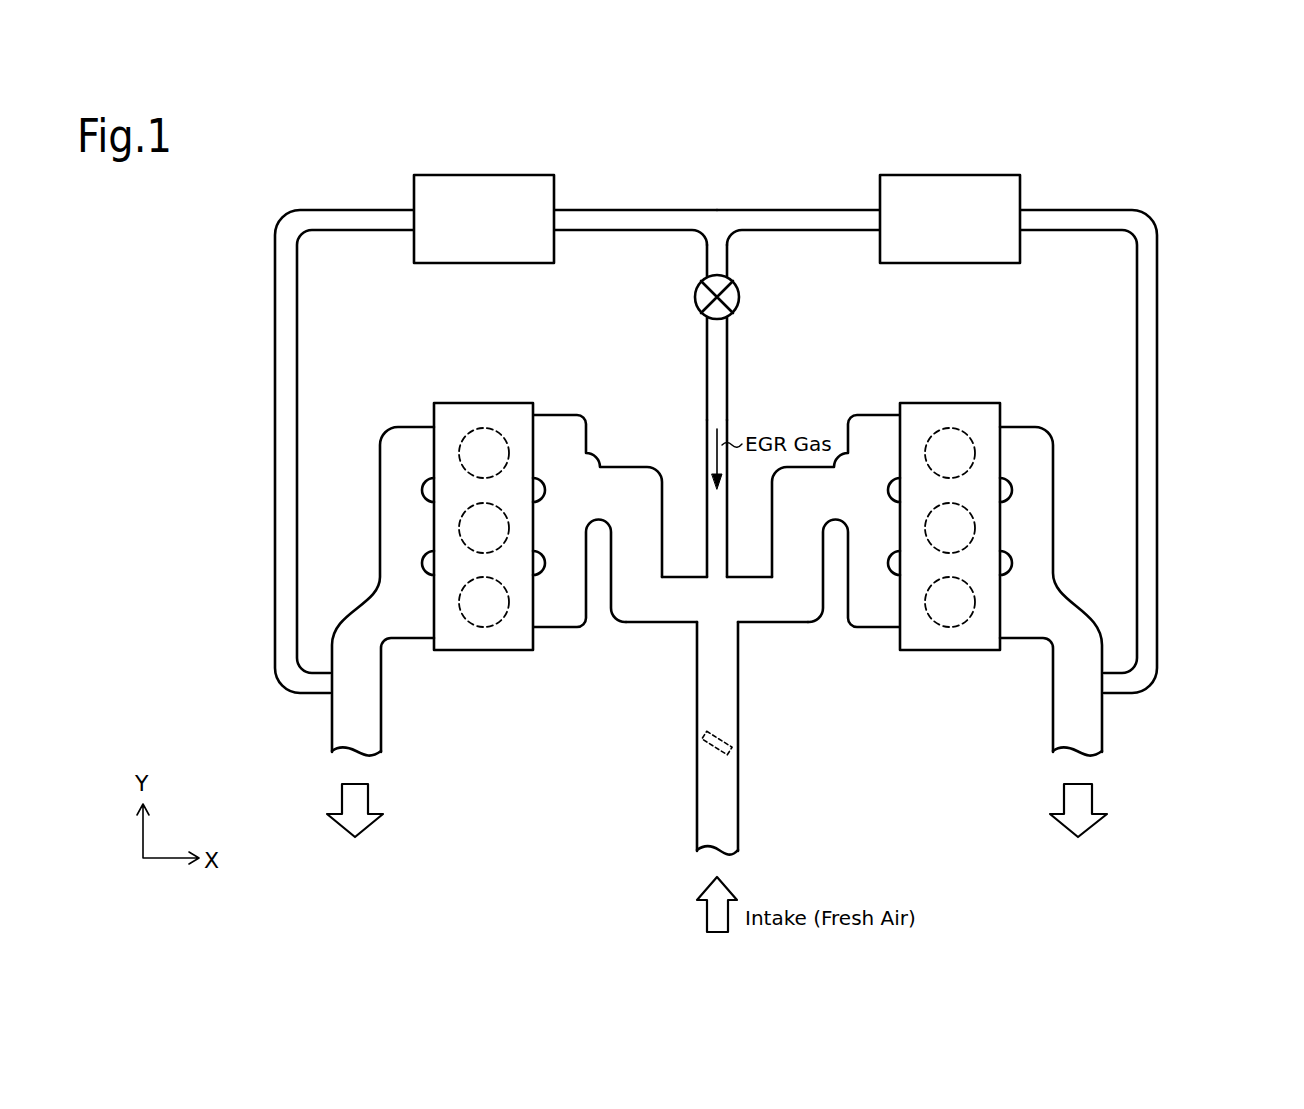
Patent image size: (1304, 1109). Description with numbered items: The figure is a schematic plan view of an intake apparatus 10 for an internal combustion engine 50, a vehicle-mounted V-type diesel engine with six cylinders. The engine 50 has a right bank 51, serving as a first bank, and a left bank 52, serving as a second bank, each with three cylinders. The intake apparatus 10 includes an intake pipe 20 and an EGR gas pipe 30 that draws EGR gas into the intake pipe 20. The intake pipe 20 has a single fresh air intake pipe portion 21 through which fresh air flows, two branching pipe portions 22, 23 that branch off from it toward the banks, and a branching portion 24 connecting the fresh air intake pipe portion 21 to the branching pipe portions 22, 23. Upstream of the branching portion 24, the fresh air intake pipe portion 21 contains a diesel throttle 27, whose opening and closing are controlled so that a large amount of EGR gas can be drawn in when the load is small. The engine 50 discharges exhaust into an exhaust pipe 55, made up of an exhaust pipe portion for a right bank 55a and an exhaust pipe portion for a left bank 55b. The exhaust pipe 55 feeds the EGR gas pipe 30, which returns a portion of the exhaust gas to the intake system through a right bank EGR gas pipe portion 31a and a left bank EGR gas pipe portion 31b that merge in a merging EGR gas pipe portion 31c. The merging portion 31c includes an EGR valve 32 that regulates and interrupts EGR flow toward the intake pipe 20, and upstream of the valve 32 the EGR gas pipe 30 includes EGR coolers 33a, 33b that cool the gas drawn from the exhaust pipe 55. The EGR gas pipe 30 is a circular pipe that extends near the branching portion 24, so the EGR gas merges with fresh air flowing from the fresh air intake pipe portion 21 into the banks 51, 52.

The intake apparatus 10 is at (802, 776).
The intake pipe 20 is at (738, 692).
The fresh air intake pipe portion 21 is at (738, 655).
The branching pipe portion 22 is at (825, 605).
The branching pipe portion 23 is at (607, 600).
The branching portion 24 is at (696, 630).
The diesel throttle 27 is at (738, 740).
The EGR gas pipe 30 is at (727, 385).
The right bank EGR gas pipe portion 31a is at (1157, 318).
The left bank EGR gas pipe portion 31b is at (297, 327).
The merging EGR gas pipe portion 31c is at (727, 345).
The EGR valve 32 is at (739, 297).
The EGR cooler 33a is at (948, 175).
The EGR cooler 33b is at (482, 175).
The internal combustion engine 50 is at (725, 487).
The right bank 51 is at (950, 403).
The left bank 52 is at (484, 403).
The exhaust pipe 55 is at (1104, 720).
The exhaust pipe portion for a right bank 55a is at (1051, 716).
The exhaust pipe portion for a left bank 55b is at (382, 705).